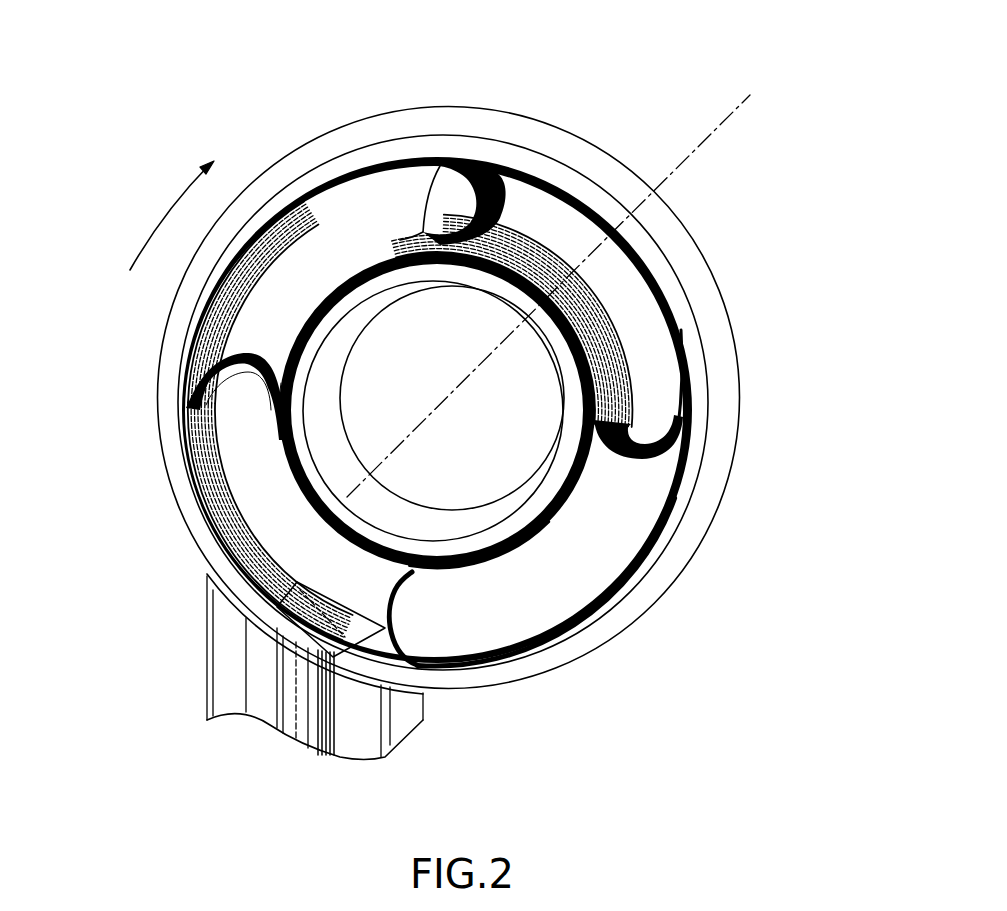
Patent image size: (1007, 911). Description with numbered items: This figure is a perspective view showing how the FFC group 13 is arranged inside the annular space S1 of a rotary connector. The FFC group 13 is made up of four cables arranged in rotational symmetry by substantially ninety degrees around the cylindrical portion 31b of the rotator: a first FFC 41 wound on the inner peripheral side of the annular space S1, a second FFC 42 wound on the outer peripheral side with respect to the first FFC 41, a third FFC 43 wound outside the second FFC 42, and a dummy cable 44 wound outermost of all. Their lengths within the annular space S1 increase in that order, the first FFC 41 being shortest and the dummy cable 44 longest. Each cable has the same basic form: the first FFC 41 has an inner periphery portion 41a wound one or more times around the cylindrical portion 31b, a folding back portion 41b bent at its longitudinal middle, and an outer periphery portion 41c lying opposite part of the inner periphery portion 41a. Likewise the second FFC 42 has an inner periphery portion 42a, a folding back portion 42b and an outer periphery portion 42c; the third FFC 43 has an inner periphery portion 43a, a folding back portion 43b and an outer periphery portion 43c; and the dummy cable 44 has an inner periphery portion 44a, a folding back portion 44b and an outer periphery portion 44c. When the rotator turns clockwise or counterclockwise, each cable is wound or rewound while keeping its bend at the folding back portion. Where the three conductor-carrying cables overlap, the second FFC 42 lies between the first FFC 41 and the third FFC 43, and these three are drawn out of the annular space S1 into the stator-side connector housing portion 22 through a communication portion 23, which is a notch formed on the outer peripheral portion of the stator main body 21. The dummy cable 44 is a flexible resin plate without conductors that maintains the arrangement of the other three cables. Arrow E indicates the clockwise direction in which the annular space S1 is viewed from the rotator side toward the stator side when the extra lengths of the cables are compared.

The FFC group 13 is at (581, 197).
The stator main body 21 is at (455, 690).
The stator-side connector housing portion 22 is at (207, 625).
The communication portion 23 is at (270, 647).
The cylindrical portion 31b is at (405, 277).
The first FFC 41 is at (186, 471).
The inner periphery portion 41a is at (270, 461).
The folding back portion 41b is at (237, 353).
The outer periphery portion 41c is at (210, 502).
The second FFC 42 is at (406, 205).
The inner periphery portion 42a is at (442, 145).
The folding back portion 42b is at (505, 178).
The outer periphery portion 42c is at (372, 165).
The third FFC 43 is at (634, 337).
The inner periphery portion 43a is at (600, 320).
The folding back portion 43b is at (650, 420).
The outer periphery portion 43c is at (688, 332).
The dummy cable 44 is at (572, 648).
The inner periphery portion 44a is at (550, 527).
The folding back portion 44b is at (410, 607).
The outer periphery portion 44c is at (546, 624).
The annular space S1 is at (618, 538).
The rotation axis x is at (463, 385).
The arrow E is at (160, 217).